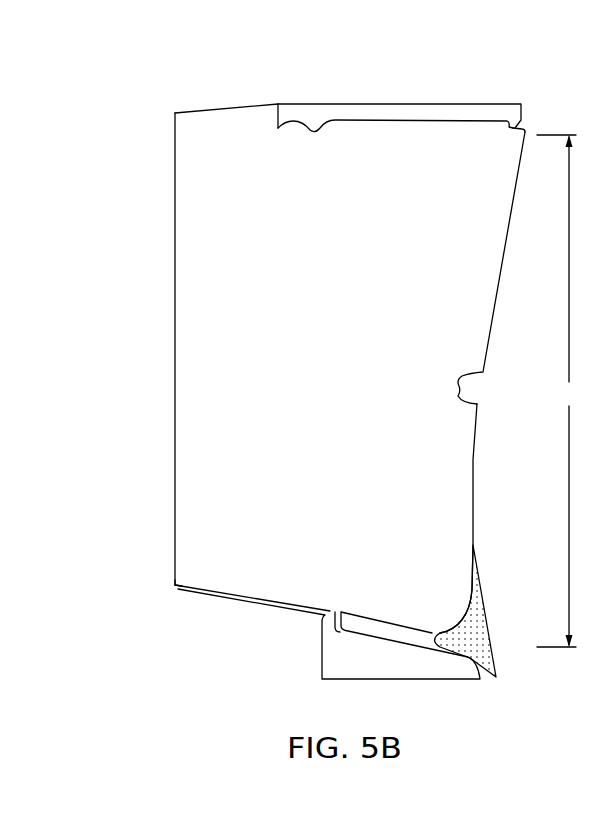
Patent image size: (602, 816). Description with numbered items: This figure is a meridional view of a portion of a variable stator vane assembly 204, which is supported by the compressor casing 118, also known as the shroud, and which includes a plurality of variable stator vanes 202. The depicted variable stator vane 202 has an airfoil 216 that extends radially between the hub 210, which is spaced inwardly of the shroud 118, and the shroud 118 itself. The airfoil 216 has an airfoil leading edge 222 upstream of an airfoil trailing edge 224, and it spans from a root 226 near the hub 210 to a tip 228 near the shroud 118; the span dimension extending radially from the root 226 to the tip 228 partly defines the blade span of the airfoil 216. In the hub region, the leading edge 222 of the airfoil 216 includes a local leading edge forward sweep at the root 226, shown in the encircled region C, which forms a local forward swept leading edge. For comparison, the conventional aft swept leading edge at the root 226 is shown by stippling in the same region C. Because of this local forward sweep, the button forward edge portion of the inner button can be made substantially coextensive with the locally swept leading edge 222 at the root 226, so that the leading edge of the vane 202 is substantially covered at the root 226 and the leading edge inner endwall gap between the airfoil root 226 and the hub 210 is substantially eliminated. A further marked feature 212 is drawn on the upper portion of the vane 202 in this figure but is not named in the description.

The variable stator vane assembly 204 is at (151, 76).
The variable stator vane 202 is at (164, 465).
The top edge 212 is at (221, 113).
The compressor casing 118 is at (297, 103).
The tip 228 is at (525, 131).
The airfoil trailing edge 224 is at (175, 372).
The airfoil 216 is at (341, 381).
The airfoil leading edge 222 is at (474, 470).
The root 226 is at (175, 586).
The hub 210 is at (250, 607).
The encircled region C is at (440, 632).